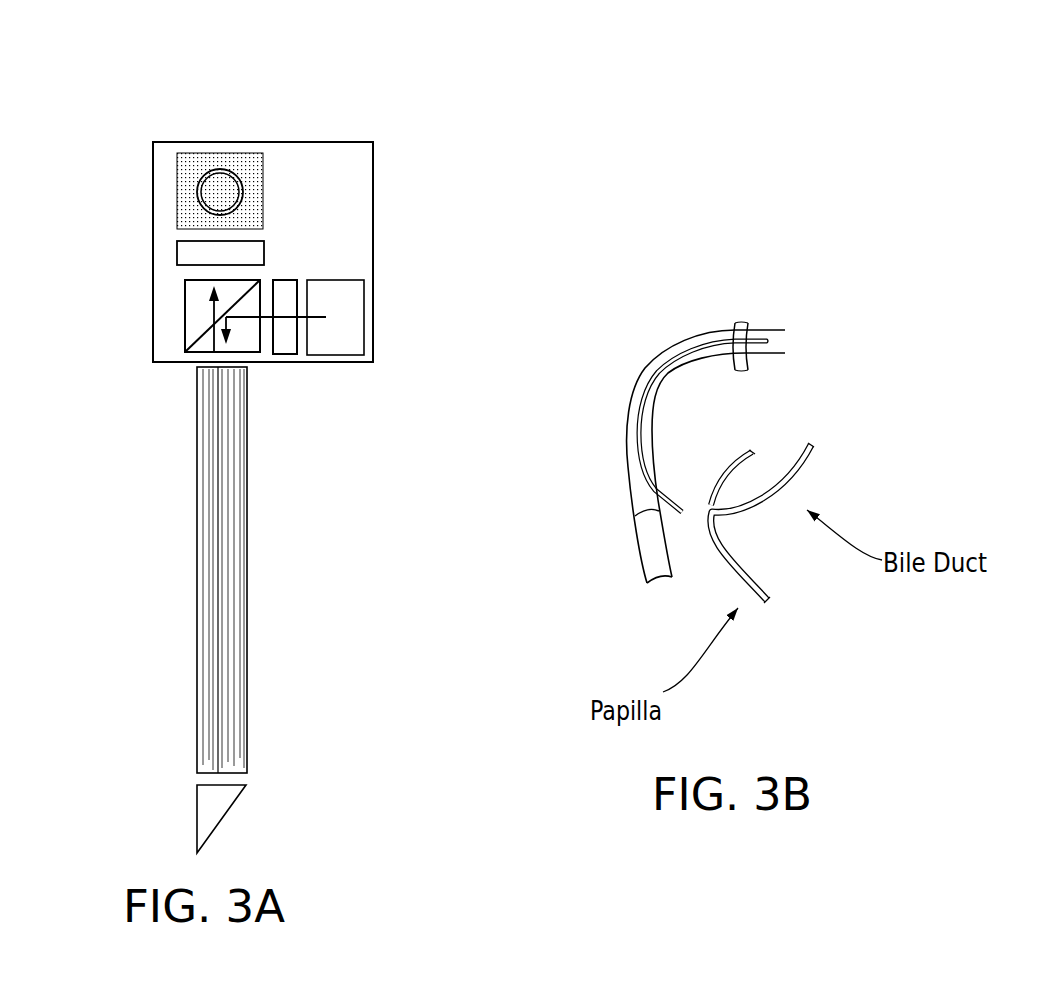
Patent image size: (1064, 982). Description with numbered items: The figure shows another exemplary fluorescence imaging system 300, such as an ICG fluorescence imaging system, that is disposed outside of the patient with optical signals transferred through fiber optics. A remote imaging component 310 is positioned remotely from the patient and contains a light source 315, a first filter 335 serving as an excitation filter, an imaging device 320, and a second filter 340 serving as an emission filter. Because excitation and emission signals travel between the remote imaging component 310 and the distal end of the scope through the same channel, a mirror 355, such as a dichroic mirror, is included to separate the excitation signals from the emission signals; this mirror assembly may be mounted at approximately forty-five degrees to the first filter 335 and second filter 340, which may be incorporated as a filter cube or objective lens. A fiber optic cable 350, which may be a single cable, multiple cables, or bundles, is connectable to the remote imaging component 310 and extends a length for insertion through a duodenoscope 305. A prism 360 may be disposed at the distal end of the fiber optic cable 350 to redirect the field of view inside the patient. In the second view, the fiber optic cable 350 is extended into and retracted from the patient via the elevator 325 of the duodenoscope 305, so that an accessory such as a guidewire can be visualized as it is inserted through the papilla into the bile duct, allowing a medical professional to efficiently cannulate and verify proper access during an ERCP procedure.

In FIG. 3A, the fluorescence imaging system 300 is at (360, 107).
In FIG. 3A, the remote imaging component 310 is at (247, 135).
In FIG. 3A, the imaging device 320 is at (193, 137).
In FIG. 3A, the second filter 340 is at (163, 247).
In FIG. 3A, the mirror 355 is at (163, 302).
In FIG. 3A, the first filter 335 is at (283, 365).
In FIG. 3A, the light source 315 is at (342, 273).
In FIG. 3A, the fiber optic cable 350 is at (175, 490).
In FIG. 3B, the fiber optic cable 350 is at (678, 482).
In FIG. 3A, the prism 360 is at (177, 810).
In FIG. 3B, the duodenoscope 305 is at (688, 323).
In FIG. 3B, the elevator 325 is at (608, 468).